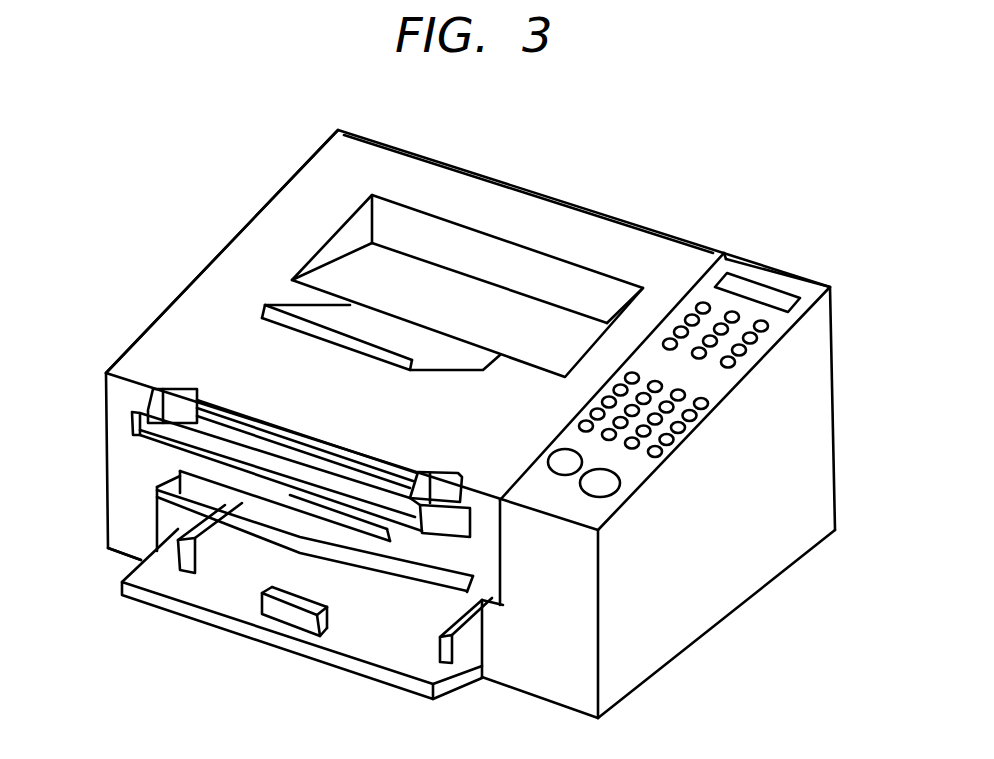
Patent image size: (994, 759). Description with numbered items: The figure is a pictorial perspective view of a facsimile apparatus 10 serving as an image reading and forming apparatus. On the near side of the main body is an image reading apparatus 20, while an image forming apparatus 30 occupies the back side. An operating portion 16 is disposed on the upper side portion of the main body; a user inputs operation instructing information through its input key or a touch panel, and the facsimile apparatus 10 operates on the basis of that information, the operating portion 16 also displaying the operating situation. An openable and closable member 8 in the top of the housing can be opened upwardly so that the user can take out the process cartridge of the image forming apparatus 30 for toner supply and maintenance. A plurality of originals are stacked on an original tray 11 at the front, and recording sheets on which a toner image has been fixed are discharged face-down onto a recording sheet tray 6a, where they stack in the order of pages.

The facsimile apparatus 10 is at (247, 175).
The image forming apparatus 30 is at (178, 278).
The operating portion 16 is at (766, 386).
The openable and closable member 8 is at (470, 310).
The recording sheet tray 6a is at (337, 318).
The original tray 11 is at (148, 400).
The image reading apparatus 20 is at (170, 465).